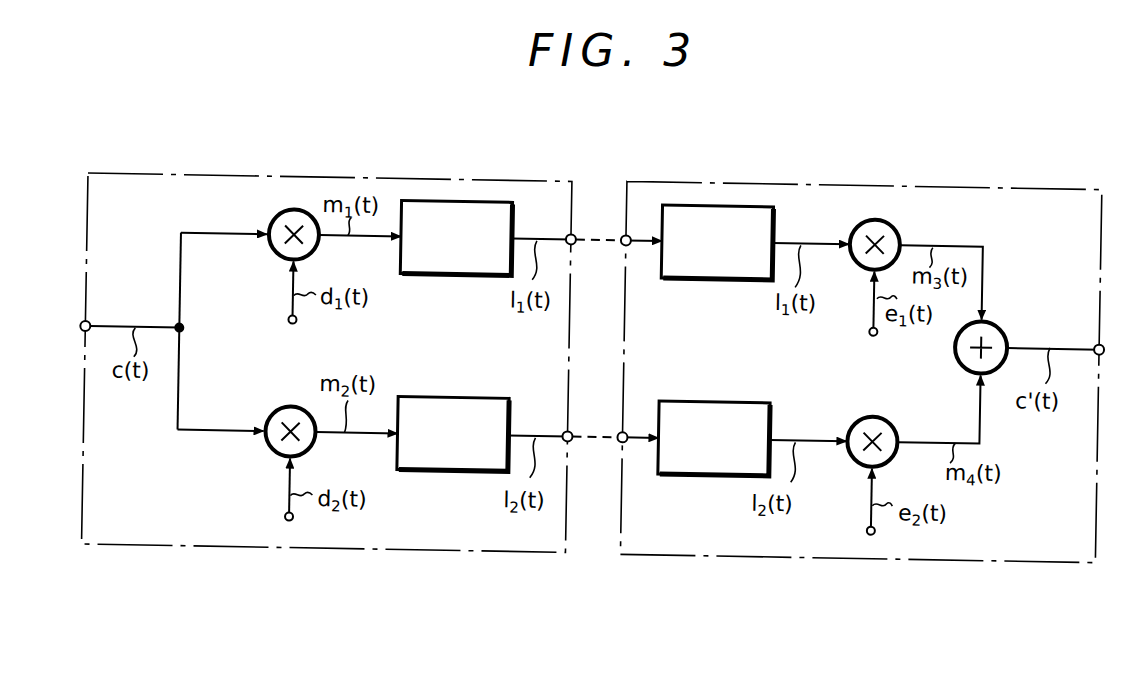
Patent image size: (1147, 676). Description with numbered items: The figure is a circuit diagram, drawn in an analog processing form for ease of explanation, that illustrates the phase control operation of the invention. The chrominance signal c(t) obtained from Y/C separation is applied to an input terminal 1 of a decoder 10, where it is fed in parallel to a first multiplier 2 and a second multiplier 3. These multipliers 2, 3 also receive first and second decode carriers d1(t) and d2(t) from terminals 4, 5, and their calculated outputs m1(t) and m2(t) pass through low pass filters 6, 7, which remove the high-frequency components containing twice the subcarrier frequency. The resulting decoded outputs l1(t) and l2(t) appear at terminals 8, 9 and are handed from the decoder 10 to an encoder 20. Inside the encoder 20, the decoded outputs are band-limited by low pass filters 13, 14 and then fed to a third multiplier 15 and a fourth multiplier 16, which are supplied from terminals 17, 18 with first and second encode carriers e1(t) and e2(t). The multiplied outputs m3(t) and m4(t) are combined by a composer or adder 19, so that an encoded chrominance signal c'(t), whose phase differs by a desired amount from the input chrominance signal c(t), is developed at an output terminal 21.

The input terminal 1 is at (84, 327).
The first multiplier 2 is at (275, 216).
The second multiplier 3 is at (275, 413).
The terminal 4 is at (290, 316).
The terminal 5 is at (290, 513).
The low pass filter 6 is at (479, 268).
The low pass filter 7 is at (436, 464).
The terminal 8 is at (577, 232).
The terminal 9 is at (577, 428).
The decoder 10 is at (350, 172).
The low pass filter 13 is at (717, 268).
The low pass filter 14 is at (710, 464).
The third multiplier 15 is at (893, 212).
The fourth multiplier 16 is at (861, 411).
The terminal 17 is at (872, 318).
The terminal 18 is at (873, 517).
The adder 19 is at (966, 351).
The encoder 20 is at (853, 171).
The output terminal 21 is at (1103, 337).